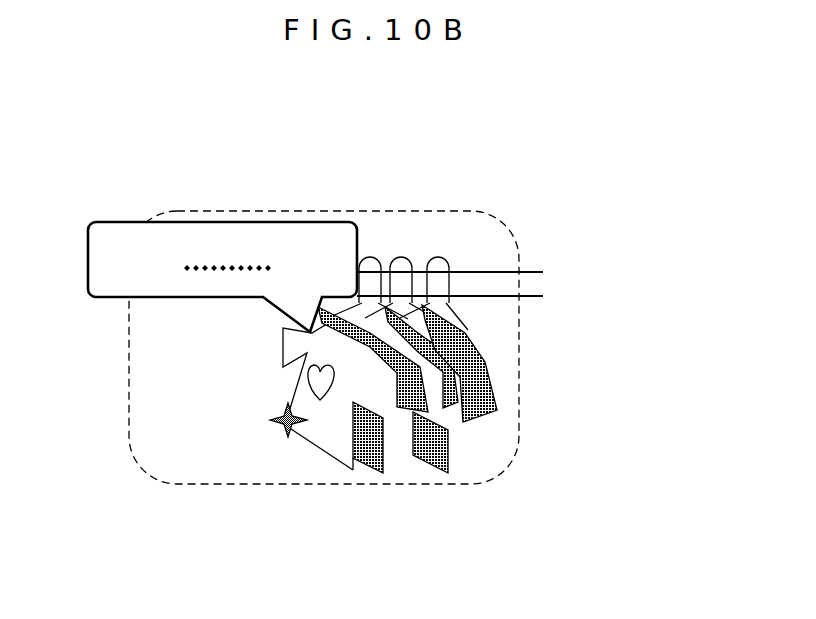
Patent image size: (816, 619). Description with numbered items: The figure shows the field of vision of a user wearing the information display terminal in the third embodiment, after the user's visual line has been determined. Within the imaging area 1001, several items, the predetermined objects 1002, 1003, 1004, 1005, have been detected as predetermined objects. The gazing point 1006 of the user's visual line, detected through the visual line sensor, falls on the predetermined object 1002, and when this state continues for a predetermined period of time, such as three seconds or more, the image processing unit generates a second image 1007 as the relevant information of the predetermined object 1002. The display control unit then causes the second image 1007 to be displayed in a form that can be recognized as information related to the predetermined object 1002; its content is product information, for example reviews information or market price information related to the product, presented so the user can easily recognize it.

The imaging area 1001 is at (519, 372).
The predetermined object 1002 is at (320, 448).
The predetermined object 1003 is at (367, 458).
The predetermined object 1004 is at (393, 452).
The predetermined object 1005 is at (433, 460).
The gazing point 1006 is at (272, 432).
The second image 1007 is at (215, 222).